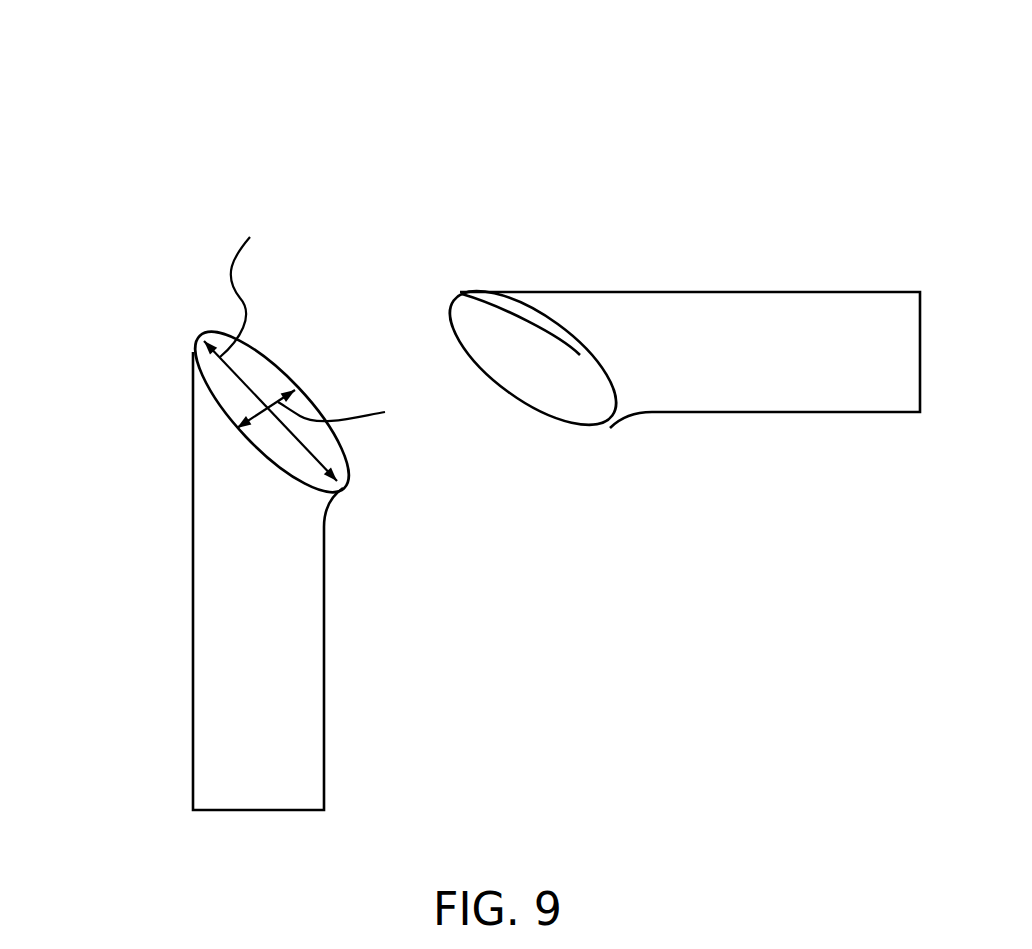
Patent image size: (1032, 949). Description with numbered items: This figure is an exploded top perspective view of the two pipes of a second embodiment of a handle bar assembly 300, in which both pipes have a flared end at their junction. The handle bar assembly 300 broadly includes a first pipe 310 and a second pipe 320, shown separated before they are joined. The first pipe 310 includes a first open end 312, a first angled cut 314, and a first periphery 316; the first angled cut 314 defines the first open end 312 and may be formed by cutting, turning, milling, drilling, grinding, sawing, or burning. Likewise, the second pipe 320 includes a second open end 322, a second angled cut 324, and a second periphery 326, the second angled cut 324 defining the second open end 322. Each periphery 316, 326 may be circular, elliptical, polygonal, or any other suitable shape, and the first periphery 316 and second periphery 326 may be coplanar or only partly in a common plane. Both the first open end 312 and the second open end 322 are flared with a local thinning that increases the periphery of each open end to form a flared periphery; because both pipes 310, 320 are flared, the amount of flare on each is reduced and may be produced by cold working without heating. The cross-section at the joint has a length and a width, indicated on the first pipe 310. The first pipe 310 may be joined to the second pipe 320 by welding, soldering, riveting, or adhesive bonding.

The handle bar assembly 300 is at (583, 92).
The first pipe 310 is at (325, 725).
The first open end 312 is at (156, 378).
The first angled cut 314 is at (222, 410).
The first periphery 316 is at (272, 462).
The second pipe 320 is at (798, 292).
The second open end 322 is at (625, 468).
The second angled cut 324 is at (512, 307).
The second periphery 326 is at (577, 355).